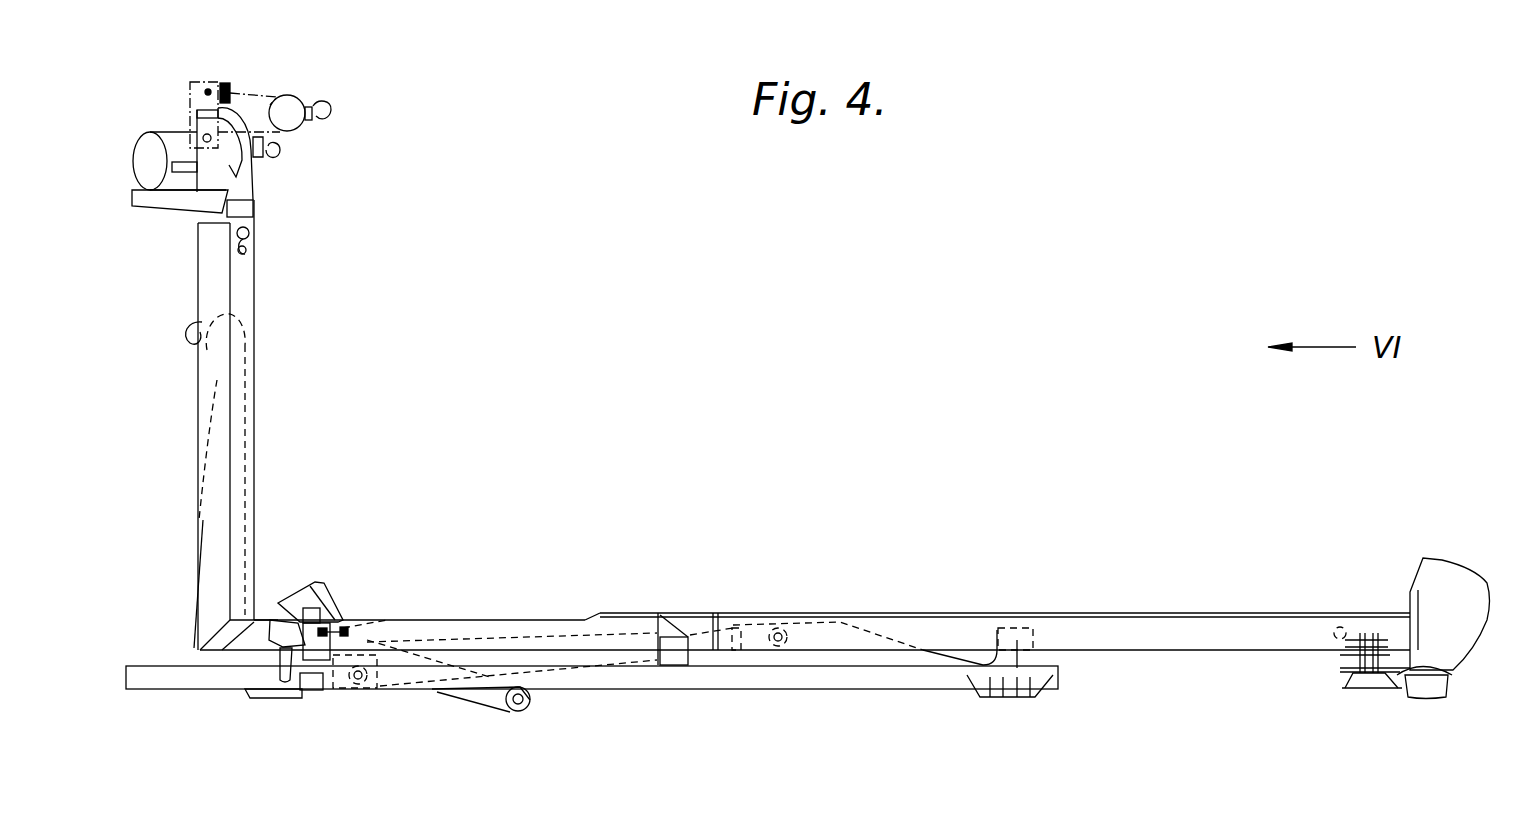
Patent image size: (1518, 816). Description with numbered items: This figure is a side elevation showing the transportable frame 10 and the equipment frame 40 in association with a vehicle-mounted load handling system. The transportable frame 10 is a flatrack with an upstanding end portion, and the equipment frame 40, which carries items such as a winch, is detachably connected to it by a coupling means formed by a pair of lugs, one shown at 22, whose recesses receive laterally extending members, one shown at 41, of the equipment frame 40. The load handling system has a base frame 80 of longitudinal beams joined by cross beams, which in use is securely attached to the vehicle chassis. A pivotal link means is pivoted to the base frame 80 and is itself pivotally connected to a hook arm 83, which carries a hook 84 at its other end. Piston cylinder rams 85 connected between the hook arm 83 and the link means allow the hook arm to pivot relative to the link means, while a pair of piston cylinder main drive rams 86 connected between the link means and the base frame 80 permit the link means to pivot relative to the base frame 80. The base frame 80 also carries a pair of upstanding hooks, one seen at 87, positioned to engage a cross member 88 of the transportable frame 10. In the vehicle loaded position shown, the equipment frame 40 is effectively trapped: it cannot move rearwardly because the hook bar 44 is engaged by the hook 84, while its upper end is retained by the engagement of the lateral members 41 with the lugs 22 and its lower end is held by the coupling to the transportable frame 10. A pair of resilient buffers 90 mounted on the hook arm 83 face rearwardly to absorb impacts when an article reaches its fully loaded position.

The transportable frame 10 is at (1250, 608).
The lug 22 is at (240, 250).
The equipment frame 40 is at (264, 316).
The laterally extending member 41 is at (258, 232).
The hook bar 44 is at (207, 350).
The base frame 80 is at (828, 680).
The hook arm 83 is at (257, 443).
The hook 84 is at (192, 325).
The piston cylinder rams 85 is at (367, 640).
The piston cylinder main drive rams 86 is at (540, 673).
The upstanding hook 87 is at (1010, 628).
The cross member 88 is at (1025, 650).
The resilient buffers 90 is at (256, 613).